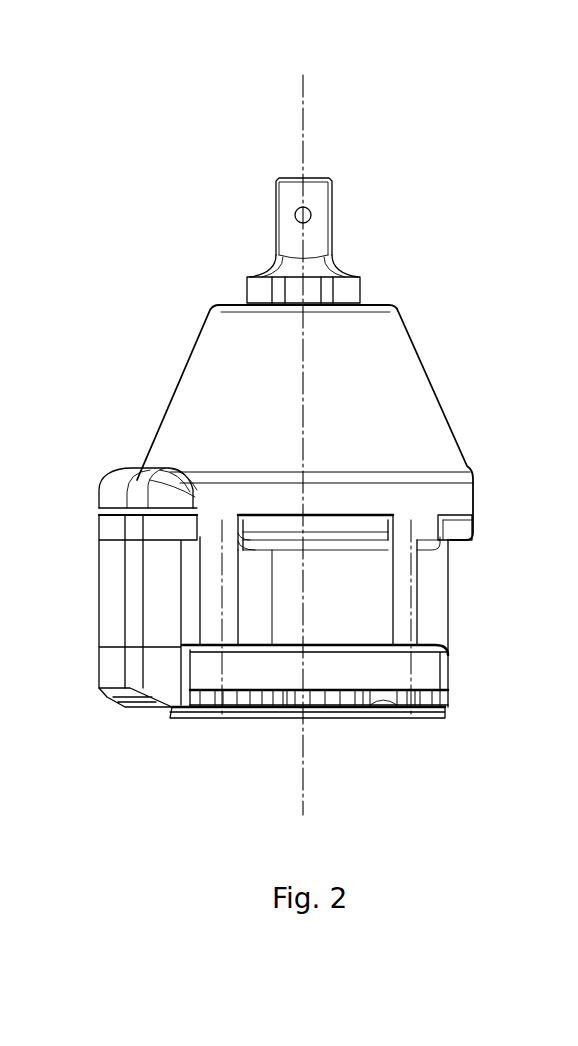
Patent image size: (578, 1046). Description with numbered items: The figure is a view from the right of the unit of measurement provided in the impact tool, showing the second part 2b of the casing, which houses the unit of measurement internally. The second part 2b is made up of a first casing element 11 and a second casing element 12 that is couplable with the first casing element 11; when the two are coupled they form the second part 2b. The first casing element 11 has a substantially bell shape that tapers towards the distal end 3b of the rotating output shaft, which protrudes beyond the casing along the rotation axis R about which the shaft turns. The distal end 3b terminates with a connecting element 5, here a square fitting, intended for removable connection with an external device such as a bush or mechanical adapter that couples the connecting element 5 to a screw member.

The second part 2b is at (147, 344).
The distal end 3b is at (275, 135).
The connecting element 5 is at (272, 184).
The first casing element 11 is at (427, 370).
The second casing element 12 is at (449, 611).
The rotation axis R is at (303, 112).